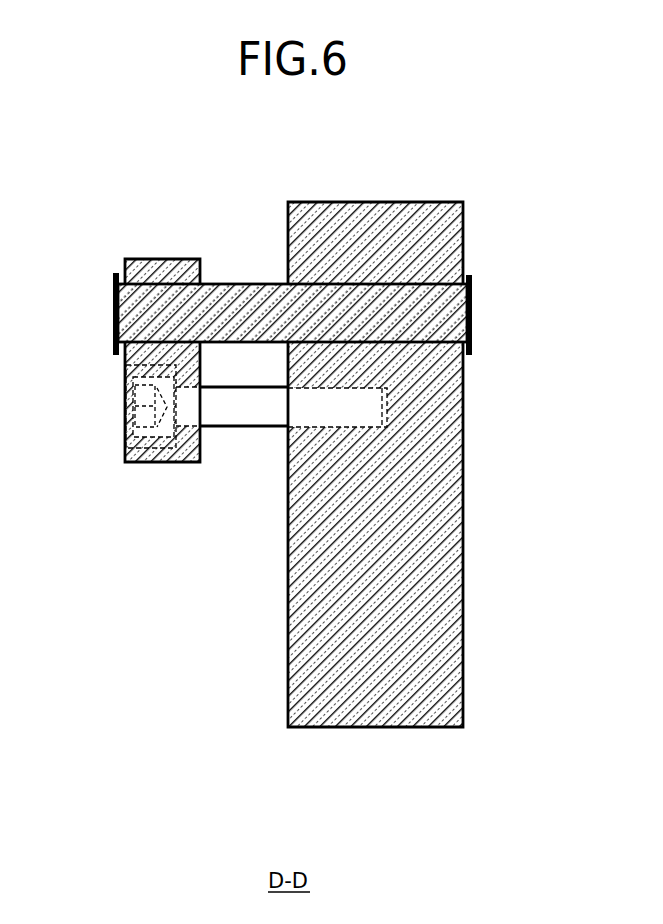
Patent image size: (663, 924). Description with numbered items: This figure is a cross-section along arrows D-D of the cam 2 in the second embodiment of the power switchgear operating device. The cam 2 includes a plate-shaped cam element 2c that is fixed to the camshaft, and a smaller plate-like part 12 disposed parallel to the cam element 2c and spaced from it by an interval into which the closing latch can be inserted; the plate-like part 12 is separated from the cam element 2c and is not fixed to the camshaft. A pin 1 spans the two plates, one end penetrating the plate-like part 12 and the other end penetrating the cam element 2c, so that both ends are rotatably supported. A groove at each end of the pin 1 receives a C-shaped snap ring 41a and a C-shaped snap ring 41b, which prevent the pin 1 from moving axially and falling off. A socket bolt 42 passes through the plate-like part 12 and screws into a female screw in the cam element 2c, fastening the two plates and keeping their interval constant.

The pin 1 is at (403, 278).
The C-shaped snap ring 41a is at (112, 328).
The C-shaped snap ring 41b is at (473, 343).
The plate-like part 12 is at (185, 462).
The bolt 42 is at (244, 428).
The cam element 2c is at (375, 568).
The cam 2 is at (294, 552).